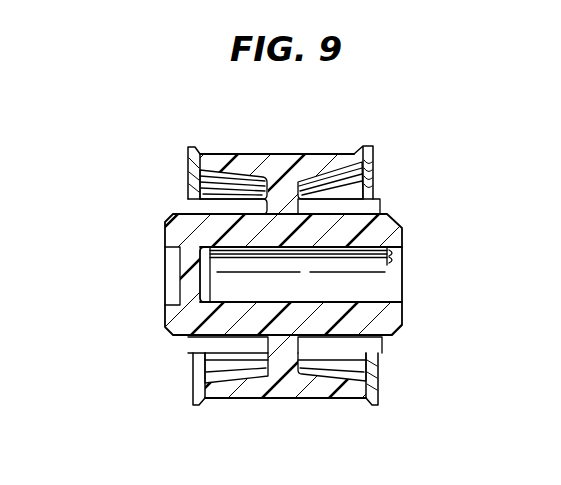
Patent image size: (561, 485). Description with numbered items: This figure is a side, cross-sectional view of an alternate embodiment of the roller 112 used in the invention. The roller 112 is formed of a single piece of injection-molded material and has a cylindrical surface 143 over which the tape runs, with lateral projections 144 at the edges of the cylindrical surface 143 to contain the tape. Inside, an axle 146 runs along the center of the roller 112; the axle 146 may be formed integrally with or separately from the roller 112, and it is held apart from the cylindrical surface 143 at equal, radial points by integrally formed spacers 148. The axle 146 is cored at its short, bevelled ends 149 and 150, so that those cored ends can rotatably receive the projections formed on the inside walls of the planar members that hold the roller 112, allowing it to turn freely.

The roller 112 is at (452, 168).
The cylindrical surface 143 is at (272, 154).
The lateral projections 144 is at (190, 150).
The axle 146 is at (392, 338).
The spacers 148 is at (192, 183).
The short, bevelled end 149 is at (178, 296).
The short, bevelled end 150 is at (405, 263).